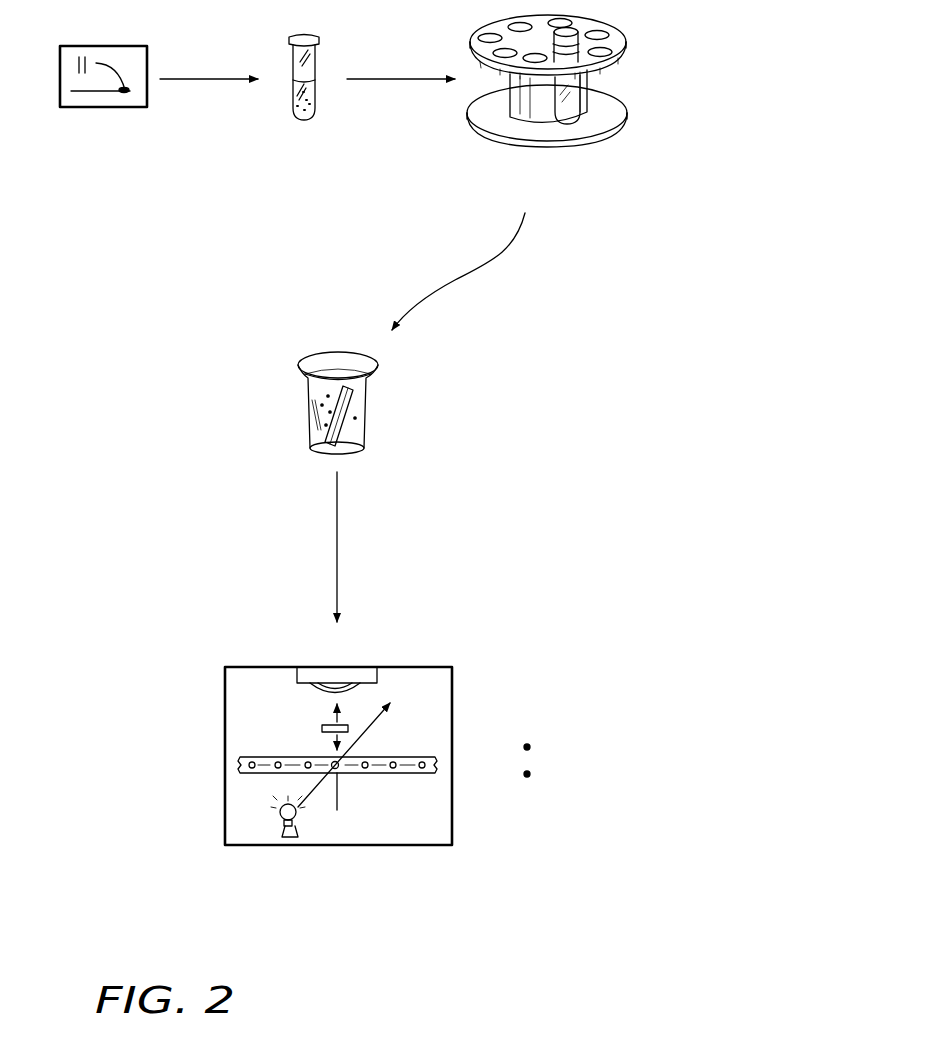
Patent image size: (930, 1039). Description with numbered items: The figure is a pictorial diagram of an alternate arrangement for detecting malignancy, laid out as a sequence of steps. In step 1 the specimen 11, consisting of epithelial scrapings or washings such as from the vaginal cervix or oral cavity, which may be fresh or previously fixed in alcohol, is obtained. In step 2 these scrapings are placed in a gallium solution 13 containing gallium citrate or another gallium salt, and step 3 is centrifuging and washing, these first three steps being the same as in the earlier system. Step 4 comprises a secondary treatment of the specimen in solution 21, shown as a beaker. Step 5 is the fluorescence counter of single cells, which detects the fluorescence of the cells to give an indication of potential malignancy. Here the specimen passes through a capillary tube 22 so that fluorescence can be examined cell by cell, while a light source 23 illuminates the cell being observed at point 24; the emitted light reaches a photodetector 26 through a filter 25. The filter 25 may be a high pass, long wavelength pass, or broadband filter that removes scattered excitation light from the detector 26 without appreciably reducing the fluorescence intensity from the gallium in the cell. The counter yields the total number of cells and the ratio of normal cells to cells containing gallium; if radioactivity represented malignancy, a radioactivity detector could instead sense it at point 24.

The step 1 is at (83, 138).
The step 2 is at (298, 148).
The step 3 is at (567, 111).
The step 4 is at (483, 416).
The step 5 is at (495, 743).
The specimen 11 is at (103, 76).
The gallium solution 13 is at (316, 107).
The solution 21 is at (358, 424).
The capillary tube 22 is at (270, 769).
The light source 23 is at (279, 814).
The point 24 is at (339, 768).
The filter 25 is at (325, 722).
The photodetector 26 is at (383, 683).